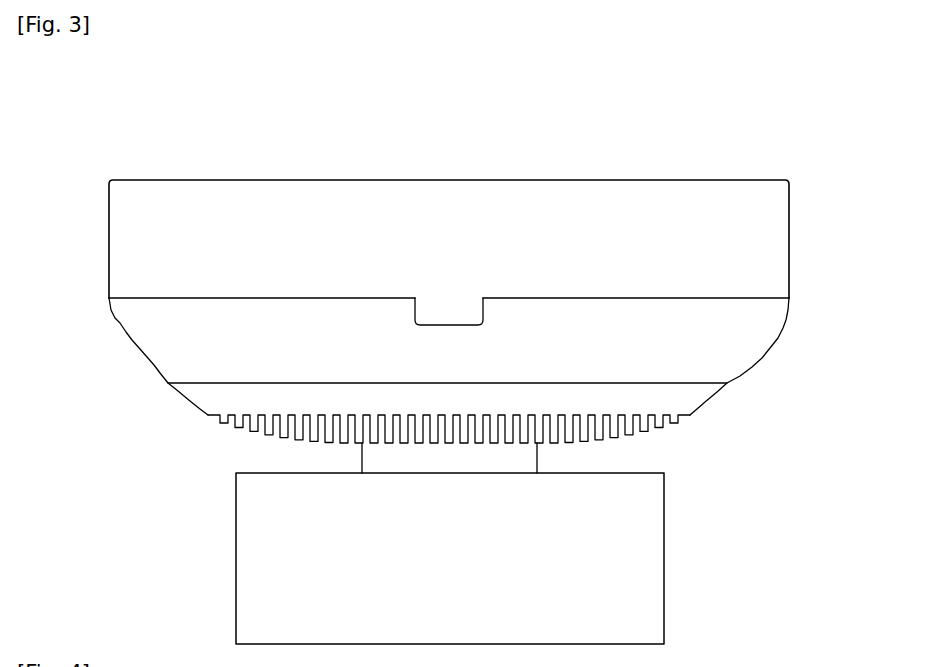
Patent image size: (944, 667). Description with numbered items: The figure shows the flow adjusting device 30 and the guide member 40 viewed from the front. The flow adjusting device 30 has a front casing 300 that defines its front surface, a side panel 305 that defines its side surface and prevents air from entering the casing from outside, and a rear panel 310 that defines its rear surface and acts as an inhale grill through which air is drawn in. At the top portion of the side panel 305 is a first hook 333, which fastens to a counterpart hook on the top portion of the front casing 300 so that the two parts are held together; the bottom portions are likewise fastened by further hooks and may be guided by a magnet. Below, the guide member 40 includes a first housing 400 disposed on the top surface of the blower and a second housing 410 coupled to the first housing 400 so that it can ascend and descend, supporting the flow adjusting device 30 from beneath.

The flow adjusting device 30 is at (86, 301).
The front casing 300 is at (768, 263).
The side panel 305 is at (768, 323).
The rear panel 310 is at (678, 400).
The first hook 333 is at (450, 310).
The guide member 40 is at (86, 512).
The first housing 400 is at (642, 557).
The second housing 410 is at (525, 457).